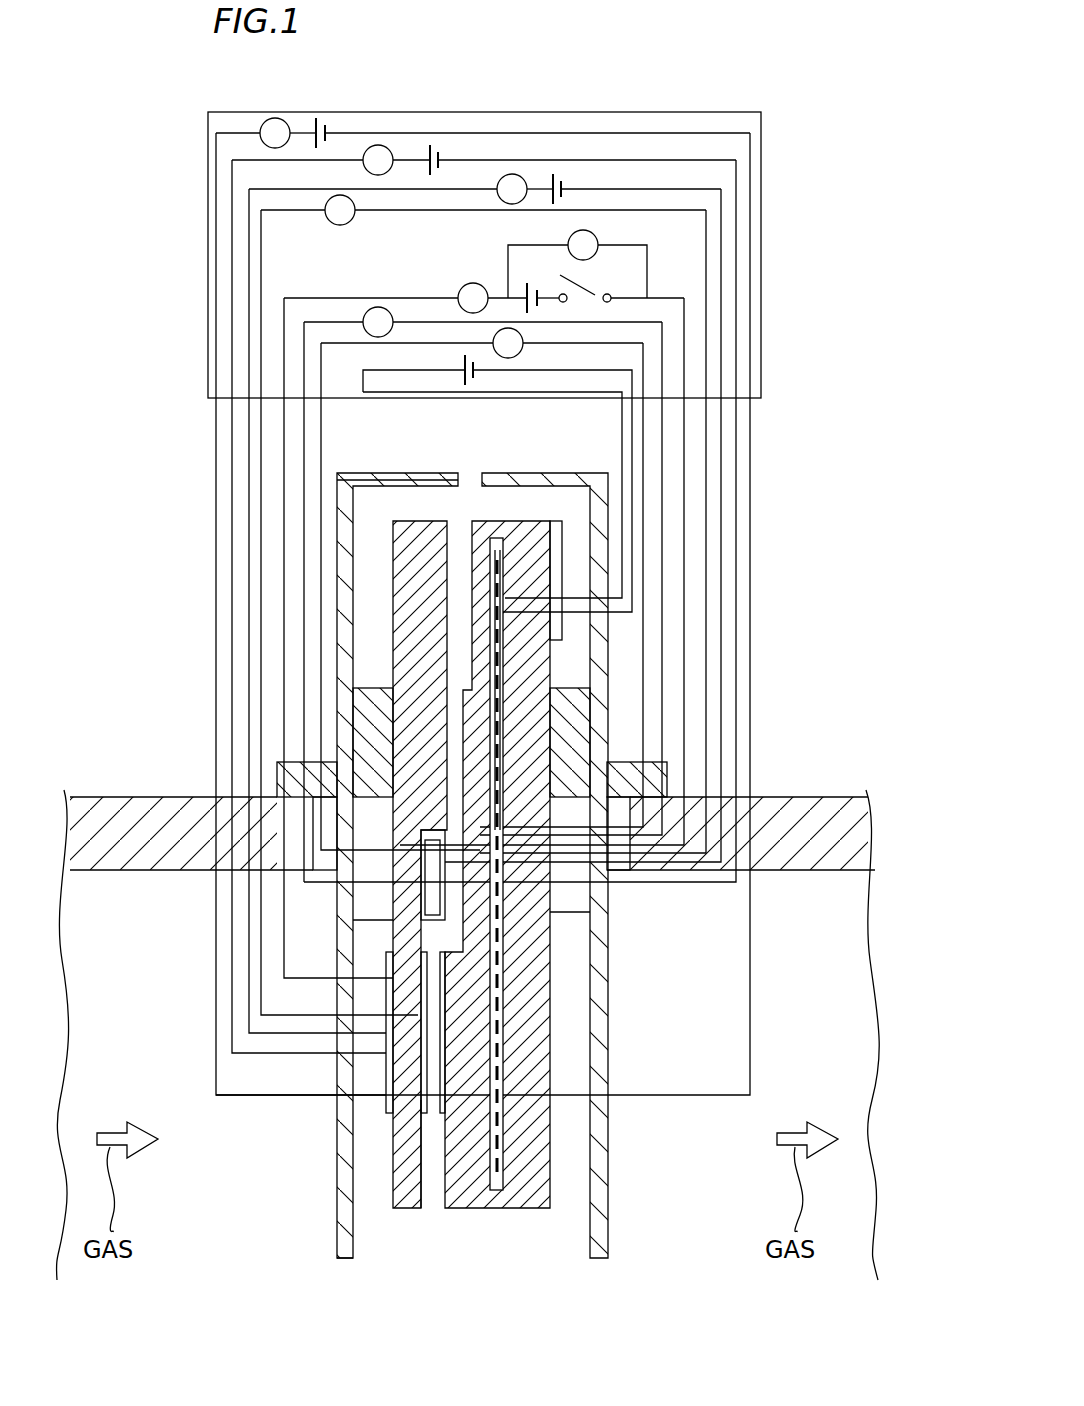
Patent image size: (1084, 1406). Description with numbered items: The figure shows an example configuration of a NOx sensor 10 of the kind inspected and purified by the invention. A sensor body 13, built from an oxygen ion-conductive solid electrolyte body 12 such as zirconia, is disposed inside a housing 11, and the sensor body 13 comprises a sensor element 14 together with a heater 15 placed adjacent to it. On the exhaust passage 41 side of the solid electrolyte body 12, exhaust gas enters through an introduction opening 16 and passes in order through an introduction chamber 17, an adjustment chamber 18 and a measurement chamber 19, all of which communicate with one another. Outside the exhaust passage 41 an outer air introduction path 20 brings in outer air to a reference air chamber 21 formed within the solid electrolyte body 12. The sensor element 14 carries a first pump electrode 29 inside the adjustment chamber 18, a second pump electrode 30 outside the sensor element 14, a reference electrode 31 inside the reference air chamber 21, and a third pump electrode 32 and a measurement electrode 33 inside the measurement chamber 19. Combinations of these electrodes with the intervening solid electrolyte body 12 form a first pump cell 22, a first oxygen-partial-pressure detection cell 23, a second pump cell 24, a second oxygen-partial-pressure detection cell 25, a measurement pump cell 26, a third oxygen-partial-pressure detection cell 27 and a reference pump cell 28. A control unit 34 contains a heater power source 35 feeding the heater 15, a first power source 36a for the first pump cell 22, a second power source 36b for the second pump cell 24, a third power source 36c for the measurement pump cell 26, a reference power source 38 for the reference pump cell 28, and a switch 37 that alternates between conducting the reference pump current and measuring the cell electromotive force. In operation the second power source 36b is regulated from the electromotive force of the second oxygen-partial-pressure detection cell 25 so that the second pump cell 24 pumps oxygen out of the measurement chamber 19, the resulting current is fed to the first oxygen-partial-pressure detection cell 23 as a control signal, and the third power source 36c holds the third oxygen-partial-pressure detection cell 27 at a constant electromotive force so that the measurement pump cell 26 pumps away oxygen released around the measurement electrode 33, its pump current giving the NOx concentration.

The NOx sensor 10 is at (182, 308).
The housing 11 is at (340, 490).
The oxygen ion-conductive solid electrolyte body 12 is at (420, 520).
The sensor body 13 is at (355, 480).
The sensor element 14 is at (345, 925).
The heater 15 is at (500, 1140).
The introduction opening 16 is at (433, 1208).
The introduction chamber 17 is at (433, 1157).
The adjustment chamber 18 is at (340, 1040).
The measurement chamber 19 is at (430, 885).
The outer air introduction path 20 is at (465, 570).
The reference air chamber 21 is at (610, 768).
The first pump cell 22 is at (752, 450).
The first oxygen-partial-pressure detection cell 23 is at (707, 492).
The second pump cell 24 is at (737, 520).
The second oxygen-partial-pressure detection cell 25 is at (660, 610).
The measurement pump cell 26 is at (720, 563).
The third oxygen-partial-pressure detection cell 27 is at (642, 652).
The reference pump cell 28 is at (686, 710).
The first pump electrode 29 is at (440, 1010).
The second pump electrode 30 is at (340, 1075).
The reference electrode 31 is at (385, 765).
The third pump electrode 32 is at (560, 915).
The measurement electrode 33 is at (430, 830).
The control unit 34 is at (207, 197).
The heater power source 35 is at (465, 368).
The first power source 36a is at (207, 121).
The second power source 36b is at (563, 150).
The third power source 36c is at (568, 180).
The switch 37 is at (575, 280).
The reference power source 38 is at (568, 305).
The exhaust passage 41 is at (100, 790).